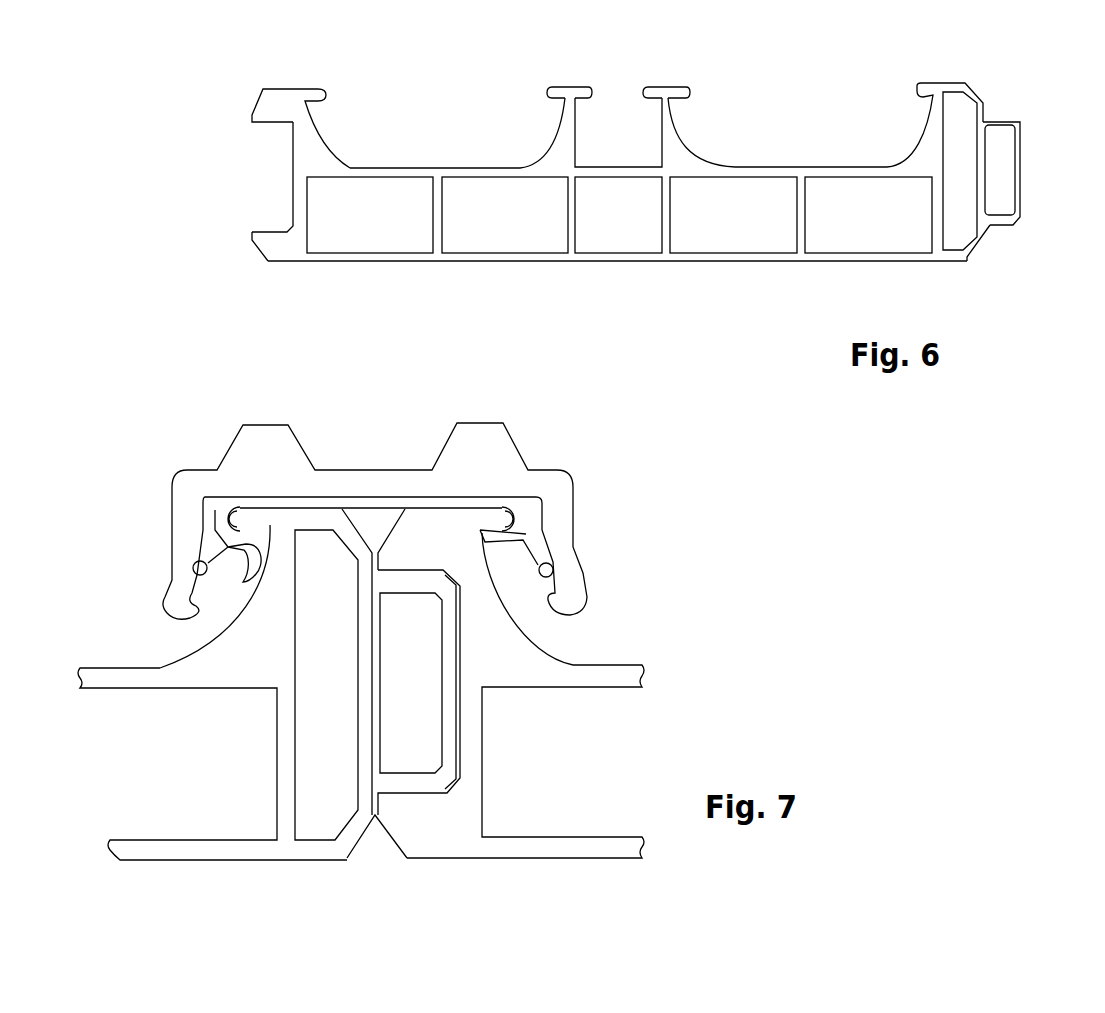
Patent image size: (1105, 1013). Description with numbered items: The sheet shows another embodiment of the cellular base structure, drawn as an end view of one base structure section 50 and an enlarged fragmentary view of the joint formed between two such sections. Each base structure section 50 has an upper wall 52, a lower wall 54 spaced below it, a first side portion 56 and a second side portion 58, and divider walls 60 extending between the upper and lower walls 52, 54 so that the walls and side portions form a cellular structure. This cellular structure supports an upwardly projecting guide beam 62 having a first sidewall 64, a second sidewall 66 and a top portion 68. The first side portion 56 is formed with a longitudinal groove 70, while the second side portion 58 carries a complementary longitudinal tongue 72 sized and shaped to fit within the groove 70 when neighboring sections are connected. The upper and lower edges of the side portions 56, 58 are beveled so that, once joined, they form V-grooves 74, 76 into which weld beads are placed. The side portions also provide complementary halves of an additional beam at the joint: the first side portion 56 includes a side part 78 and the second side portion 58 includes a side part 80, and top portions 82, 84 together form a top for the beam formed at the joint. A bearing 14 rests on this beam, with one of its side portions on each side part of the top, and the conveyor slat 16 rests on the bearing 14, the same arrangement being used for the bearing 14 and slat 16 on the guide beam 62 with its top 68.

In FIG. 7, the bearing 14 is at (415, 503).
In FIG. 7, the conveyor slat 16 is at (243, 457).
In FIG. 6, the base structure section 50 is at (628, 282).
In FIG. 7, the base structure section 50 is at (95, 648).
In FIG. 6, the upper wall 52 is at (398, 170).
In FIG. 6, the lower wall 54 is at (357, 261).
In FIG. 6, the first side portion 56 is at (236, 241).
In FIG. 6, the second side portion 58 is at (1002, 239).
In FIG. 6, the divider walls 60 is at (433, 217).
In FIG. 6, the guide beam 62 is at (729, 128).
In FIG. 6, the first sidewall 64 is at (550, 150).
In FIG. 6, the second sidewall 66 is at (677, 137).
In FIG. 6, the top portion 68 is at (580, 87).
In FIG. 6, the longitudinal groove 70 is at (270, 167).
In FIG. 7, the longitudinal groove 70 is at (457, 647).
In FIG. 6, the longitudinal tongue 72 is at (1020, 142).
In FIG. 7, the longitudinal tongue 72 is at (447, 732).
In FIG. 7, the V-groove 74 is at (375, 523).
In FIG. 7, the V-groove 76 is at (375, 845).
In FIG. 6, the side part 78 is at (265, 102).
In FIG. 7, the side part 78 is at (470, 568).
In FIG. 6, the side part 80 is at (922, 145).
In FIG. 7, the side part 80 is at (260, 622).
In FIG. 7, the top portion 82 is at (267, 523).
In FIG. 7, the top portion 84 is at (503, 513).